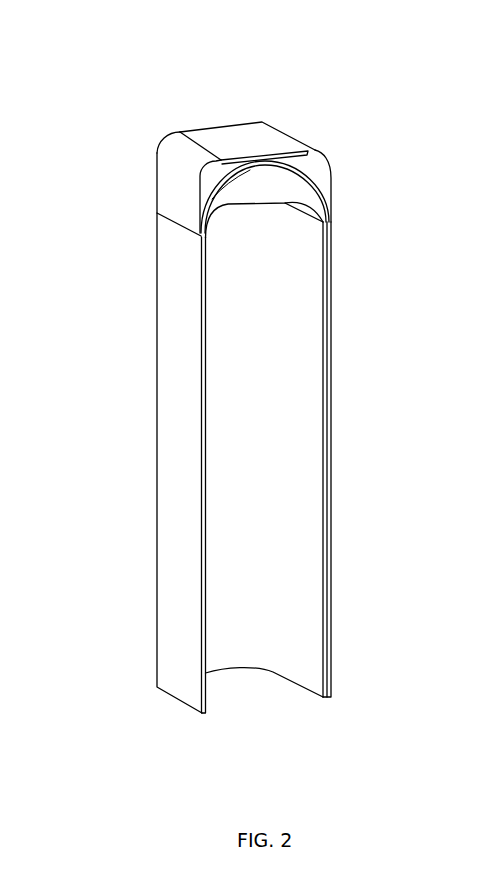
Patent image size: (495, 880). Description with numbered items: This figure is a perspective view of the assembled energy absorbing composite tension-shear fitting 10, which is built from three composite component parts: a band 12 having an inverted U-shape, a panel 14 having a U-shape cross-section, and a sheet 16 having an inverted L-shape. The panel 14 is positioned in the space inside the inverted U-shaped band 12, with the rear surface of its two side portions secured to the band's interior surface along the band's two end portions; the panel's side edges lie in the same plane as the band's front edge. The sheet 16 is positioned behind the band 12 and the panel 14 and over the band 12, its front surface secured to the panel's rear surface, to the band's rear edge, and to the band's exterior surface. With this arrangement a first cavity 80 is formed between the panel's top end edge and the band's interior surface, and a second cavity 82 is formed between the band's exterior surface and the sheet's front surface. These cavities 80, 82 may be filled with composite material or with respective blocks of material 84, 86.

The energy absorbing composite tension-shear fitting 10 is at (413, 110).
The band 12 is at (150, 387).
The panel 14 is at (244, 676).
The sheet 16 is at (225, 120).
The first cavity 80 is at (224, 198).
The second cavity 82 is at (206, 174).
The block of material 84 is at (200, 195).
The block of material 86 is at (182, 148).